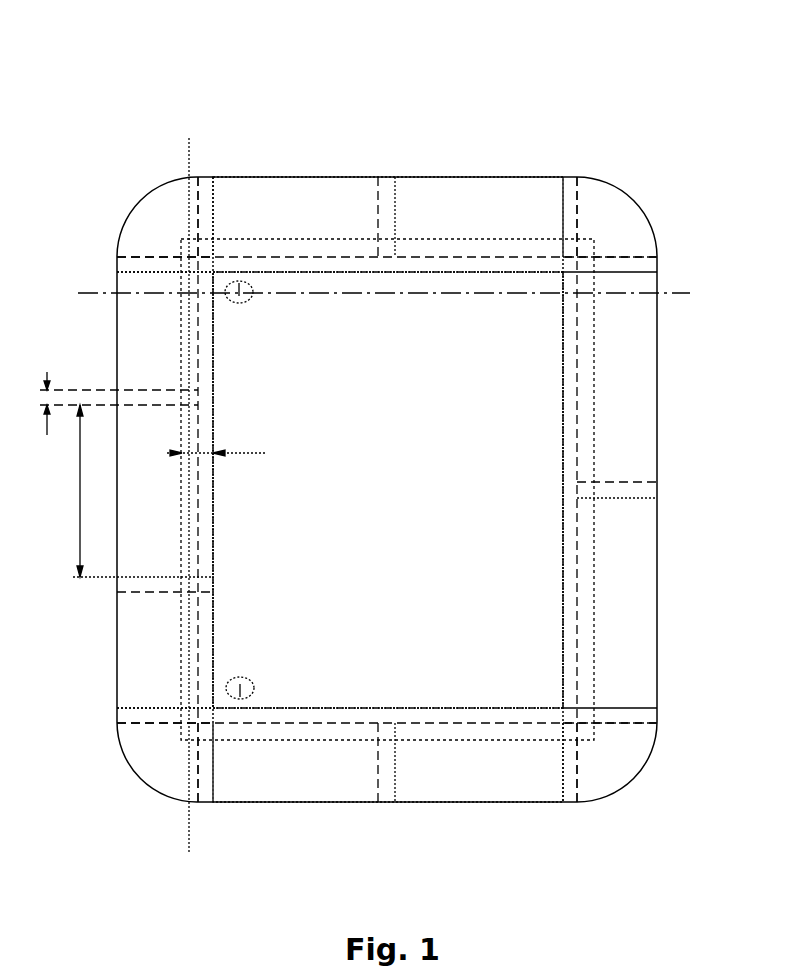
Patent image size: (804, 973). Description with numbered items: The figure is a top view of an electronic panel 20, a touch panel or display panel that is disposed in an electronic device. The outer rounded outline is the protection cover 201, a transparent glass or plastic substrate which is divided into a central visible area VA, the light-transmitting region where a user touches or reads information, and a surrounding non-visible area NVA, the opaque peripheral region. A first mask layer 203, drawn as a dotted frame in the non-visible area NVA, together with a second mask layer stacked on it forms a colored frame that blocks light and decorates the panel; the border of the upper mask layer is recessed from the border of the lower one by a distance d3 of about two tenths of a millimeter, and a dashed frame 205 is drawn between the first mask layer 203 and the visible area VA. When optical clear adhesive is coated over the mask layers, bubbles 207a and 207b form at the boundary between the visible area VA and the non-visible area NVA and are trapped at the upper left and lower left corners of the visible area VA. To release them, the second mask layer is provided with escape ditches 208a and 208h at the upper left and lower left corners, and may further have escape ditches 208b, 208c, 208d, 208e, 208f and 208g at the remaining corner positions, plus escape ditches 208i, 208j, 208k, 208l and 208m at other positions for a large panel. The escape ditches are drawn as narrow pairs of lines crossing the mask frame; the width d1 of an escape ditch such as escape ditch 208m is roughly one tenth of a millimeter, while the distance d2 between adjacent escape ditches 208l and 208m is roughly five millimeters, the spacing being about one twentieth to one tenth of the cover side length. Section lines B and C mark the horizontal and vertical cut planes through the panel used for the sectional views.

The electronic panel 20 is at (648, 35).
The protection cover 201 is at (657, 337).
The first mask layer 203 is at (571, 378).
The peripheral circuit region 205 is at (595, 426).
The bubble 207a is at (240, 283).
The bubble 207b is at (240, 699).
The escape ditch 208a is at (167, 262).
The escape ditch 208b is at (203, 177).
The escape ditch 208c is at (571, 178).
The escape ditch 208d is at (630, 257).
The escape ditch 208e is at (640, 717).
The escape ditch 208f is at (567, 800).
The escape ditch 208g is at (205, 808).
The escape ditch 208h is at (137, 715).
The escape ditch 208i is at (387, 177).
The escape ditch 208j is at (645, 490).
The escape ditch 208k is at (383, 803).
The escape ditch 208l is at (133, 588).
The escape ditch 208m is at (157, 392).
The visible area VA is at (530, 597).
The non-visible area NVA is at (627, 643).
The width of the escape ditch d1 is at (36, 395).
The distance between two adjacent escape ditches d2 is at (69, 491).
The recess distance d3 is at (217, 443).
The section line B- B is at (92, 288).
The section line C- C is at (185, 150).